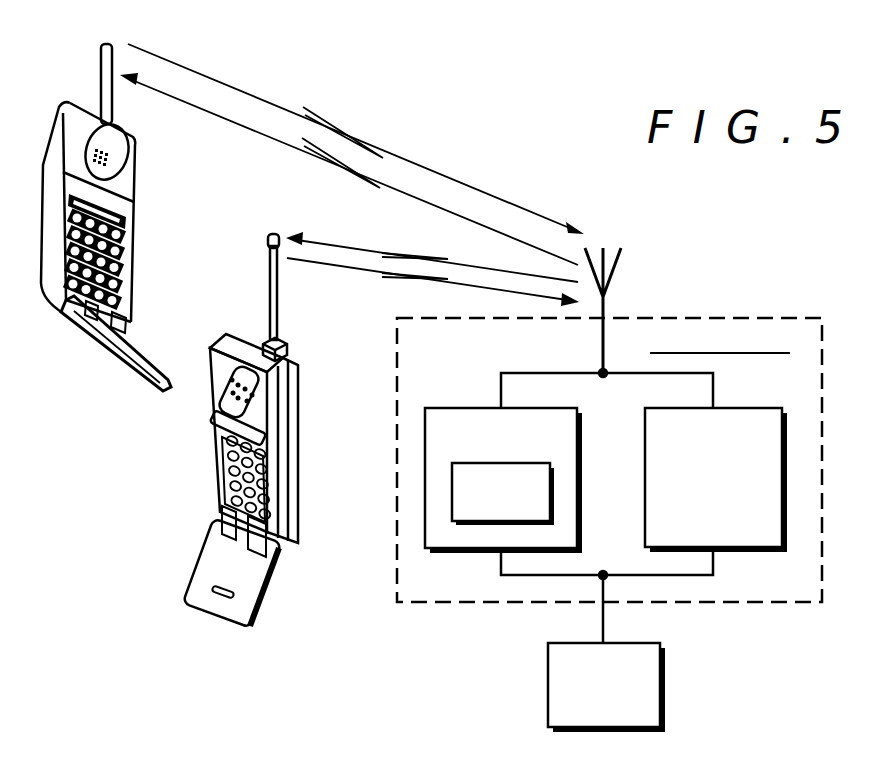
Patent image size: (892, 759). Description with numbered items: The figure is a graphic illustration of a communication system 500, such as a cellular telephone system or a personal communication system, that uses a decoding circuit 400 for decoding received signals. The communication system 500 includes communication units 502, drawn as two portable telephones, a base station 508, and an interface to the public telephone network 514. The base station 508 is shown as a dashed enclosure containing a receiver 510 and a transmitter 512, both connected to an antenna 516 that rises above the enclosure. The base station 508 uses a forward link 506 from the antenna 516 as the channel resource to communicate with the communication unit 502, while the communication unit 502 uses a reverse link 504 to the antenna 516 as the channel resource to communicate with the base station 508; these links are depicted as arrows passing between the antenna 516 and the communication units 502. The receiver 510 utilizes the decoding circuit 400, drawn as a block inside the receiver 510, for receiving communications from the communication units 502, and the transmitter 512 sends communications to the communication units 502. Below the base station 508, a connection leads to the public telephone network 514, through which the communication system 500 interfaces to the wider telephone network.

The communication system 500 is at (787, 228).
The communication unit 502 is at (130, 247).
The reverse link 504 is at (255, 100).
The forward link 506 is at (255, 137).
The base station 508 is at (397, 504).
The receiver 510 is at (440, 406).
The transmitter 512 is at (752, 407).
The public telephone network 514 is at (665, 678).
The antenna 516 is at (622, 250).
The decoding circuit 400 is at (550, 490).